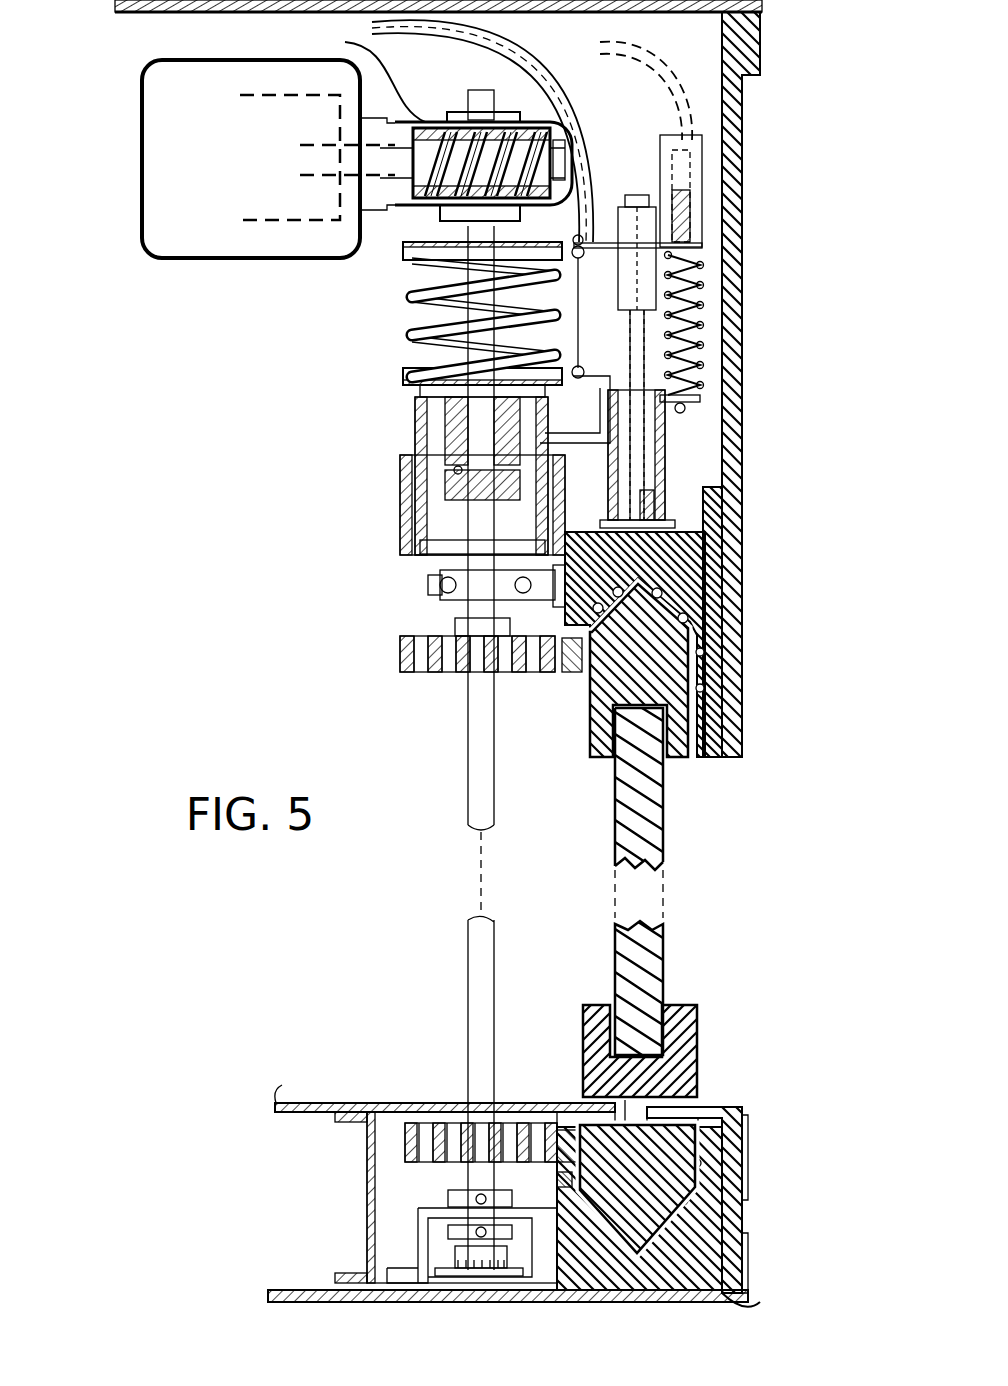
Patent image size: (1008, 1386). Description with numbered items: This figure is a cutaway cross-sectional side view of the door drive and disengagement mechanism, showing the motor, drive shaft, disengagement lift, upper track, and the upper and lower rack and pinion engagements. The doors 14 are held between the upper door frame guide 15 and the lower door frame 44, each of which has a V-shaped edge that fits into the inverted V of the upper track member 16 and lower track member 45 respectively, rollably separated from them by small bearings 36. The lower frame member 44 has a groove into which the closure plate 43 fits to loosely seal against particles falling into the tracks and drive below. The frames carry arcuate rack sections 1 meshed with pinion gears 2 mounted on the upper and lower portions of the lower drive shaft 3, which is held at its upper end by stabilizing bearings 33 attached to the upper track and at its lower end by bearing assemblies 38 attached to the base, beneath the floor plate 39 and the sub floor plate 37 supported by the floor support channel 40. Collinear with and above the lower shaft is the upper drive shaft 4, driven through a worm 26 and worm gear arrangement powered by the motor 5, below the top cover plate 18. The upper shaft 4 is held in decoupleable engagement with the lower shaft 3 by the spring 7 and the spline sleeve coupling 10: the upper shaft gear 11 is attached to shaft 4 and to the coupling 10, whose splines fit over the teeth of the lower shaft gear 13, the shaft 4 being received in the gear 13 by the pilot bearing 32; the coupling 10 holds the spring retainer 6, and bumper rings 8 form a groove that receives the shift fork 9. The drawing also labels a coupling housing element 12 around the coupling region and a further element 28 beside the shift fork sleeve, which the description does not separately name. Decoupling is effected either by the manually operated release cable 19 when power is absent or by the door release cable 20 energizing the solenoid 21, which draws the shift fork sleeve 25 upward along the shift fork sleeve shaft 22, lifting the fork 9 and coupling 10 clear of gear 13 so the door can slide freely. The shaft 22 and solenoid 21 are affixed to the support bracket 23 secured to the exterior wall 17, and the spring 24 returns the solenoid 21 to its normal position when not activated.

The arcuate rack section 1 is at (570, 674).
The pinion gear 2 is at (430, 676).
The lower drive shaft 3 is at (462, 606).
The upper drive shaft 4 is at (478, 92).
The motor 5 is at (143, 135).
The spring retainer 6 is at (408, 252).
The spring 7 is at (425, 332).
The bumper ring 8 is at (420, 445).
The shift fork 9 is at (596, 396).
The spline sleeve coupling 10 is at (445, 420).
The upper shaft gear 11 is at (430, 384).
The sleeve 12 is at (402, 500).
The lower shaft gear 13 is at (425, 550).
The door 14 is at (667, 848).
The upper door frame guide 15 is at (600, 760).
The upper track member 16 is at (715, 760).
The exterior wall 17 is at (742, 526).
The top cover plate 18 is at (148, 14).
The manually operated release cable 19 is at (488, 42).
The door release cable 20 is at (632, 50).
The solenoid 21 is at (700, 142).
The shift fork sleeve shaft 22 is at (638, 196).
The support bracket 23 is at (702, 244).
The spring 24 is at (700, 300).
The shift fork sleeve 25 is at (662, 460).
The worm 26 is at (355, 68).
The seal 28 is at (655, 492).
The pilot bearing 32 is at (452, 470).
The stabilizing bearing 33 is at (440, 588).
The bearing 36 is at (705, 652).
The sub floor plate 37 is at (275, 1290).
The bearing assembly 38 is at (430, 1258).
The floor plate 39 is at (280, 1100).
The floor support channel 40 is at (367, 1185).
The closure plate 43 is at (742, 1104).
The lower door frame 44 is at (697, 1010).
The lower track member 45 is at (760, 1302).